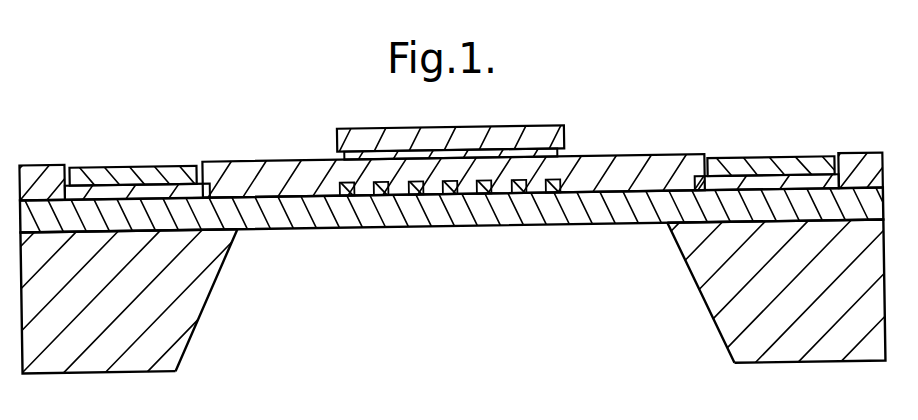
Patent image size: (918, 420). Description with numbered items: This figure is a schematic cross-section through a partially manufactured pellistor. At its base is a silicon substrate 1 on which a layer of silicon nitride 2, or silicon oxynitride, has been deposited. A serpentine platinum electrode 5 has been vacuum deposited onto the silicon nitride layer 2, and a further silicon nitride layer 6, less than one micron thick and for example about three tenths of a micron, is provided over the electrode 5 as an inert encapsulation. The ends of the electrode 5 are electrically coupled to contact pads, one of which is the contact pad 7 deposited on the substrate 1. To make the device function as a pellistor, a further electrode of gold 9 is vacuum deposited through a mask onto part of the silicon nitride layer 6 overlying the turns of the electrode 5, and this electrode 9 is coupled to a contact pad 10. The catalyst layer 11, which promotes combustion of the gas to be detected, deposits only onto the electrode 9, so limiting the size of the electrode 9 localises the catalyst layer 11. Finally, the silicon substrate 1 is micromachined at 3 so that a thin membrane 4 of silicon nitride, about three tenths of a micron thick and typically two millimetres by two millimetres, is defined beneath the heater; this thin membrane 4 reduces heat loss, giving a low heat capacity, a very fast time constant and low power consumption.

The silicon substrate 1 is at (727, 317).
The silicon nitride layer 2 is at (249, 222).
The micromachined region 3 is at (178, 327).
The thin membrane 4 is at (425, 248).
The platinum electrode 5 is at (523, 194).
The further silicon nitride layer 6 is at (262, 176).
The contact pad 7 is at (115, 172).
The gold electrode 9 is at (556, 152).
The contact pad 10 is at (777, 160).
The catalyst layer 11 is at (421, 128).